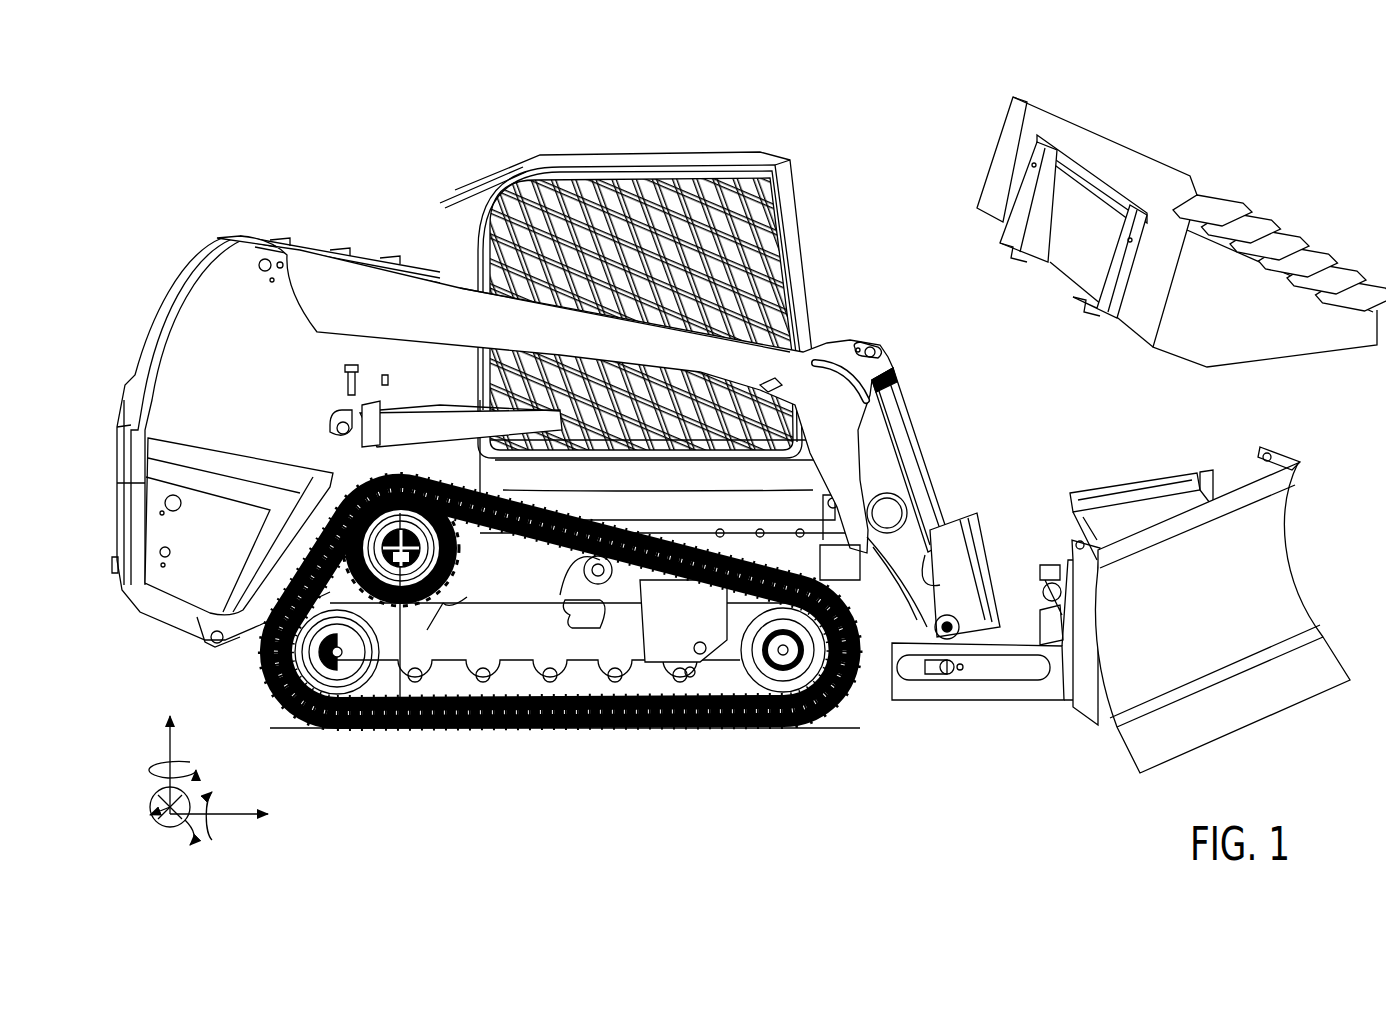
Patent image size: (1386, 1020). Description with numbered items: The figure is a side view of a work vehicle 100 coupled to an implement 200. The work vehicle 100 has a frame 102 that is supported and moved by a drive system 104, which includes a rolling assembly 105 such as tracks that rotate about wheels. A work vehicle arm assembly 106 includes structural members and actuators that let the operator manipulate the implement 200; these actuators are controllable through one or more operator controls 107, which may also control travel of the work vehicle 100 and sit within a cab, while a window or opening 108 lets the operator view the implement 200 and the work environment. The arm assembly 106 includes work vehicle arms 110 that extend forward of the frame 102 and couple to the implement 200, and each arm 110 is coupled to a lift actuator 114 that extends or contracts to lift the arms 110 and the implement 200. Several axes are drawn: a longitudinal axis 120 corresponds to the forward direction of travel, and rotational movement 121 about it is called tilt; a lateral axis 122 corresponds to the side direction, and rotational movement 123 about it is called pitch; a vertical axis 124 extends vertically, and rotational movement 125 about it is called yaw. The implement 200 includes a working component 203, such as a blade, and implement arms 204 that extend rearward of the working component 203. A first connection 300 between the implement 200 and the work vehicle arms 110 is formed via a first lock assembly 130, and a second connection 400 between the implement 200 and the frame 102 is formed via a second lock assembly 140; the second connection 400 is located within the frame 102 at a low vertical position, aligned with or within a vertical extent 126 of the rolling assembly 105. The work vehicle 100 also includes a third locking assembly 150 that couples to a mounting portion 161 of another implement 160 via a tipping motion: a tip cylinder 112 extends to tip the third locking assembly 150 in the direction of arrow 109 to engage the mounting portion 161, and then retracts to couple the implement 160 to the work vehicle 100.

The work vehicle 100 is at (243, 160).
The frame 102 is at (758, 515).
The drive system 104 is at (565, 652).
The rolling assembly 105 is at (573, 727).
The work vehicle arm assembly 106 is at (572, 414).
The operator controls 107 is at (728, 305).
The window or opening 108 is at (644, 305).
The arrow 109 is at (1030, 478).
The work vehicle arms 110 is at (458, 290).
The tip cylinder 112 is at (905, 415).
The lift actuator 114 is at (478, 418).
The longitudinal axis 120 is at (240, 808).
The rotational movement 121 is at (218, 838).
The lateral axis 122 is at (165, 826).
The rotational movement 123 is at (195, 840).
The vertical axis 124 is at (168, 745).
The rotational movement 125 is at (148, 775).
The vertical extent 126 is at (405, 645).
The first lock assembly 130 is at (917, 637).
The second lock assembly 140 is at (860, 692).
The third locking assembly 150 is at (952, 588).
The implement 160 is at (1135, 220).
The mounting portion 161 is at (1085, 195).
The implement 200 is at (1206, 609).
The working component 203 is at (1278, 590).
The implement arms 204 is at (1043, 690).
The first connection 300 is at (962, 712).
The second connection 400 is at (872, 655).